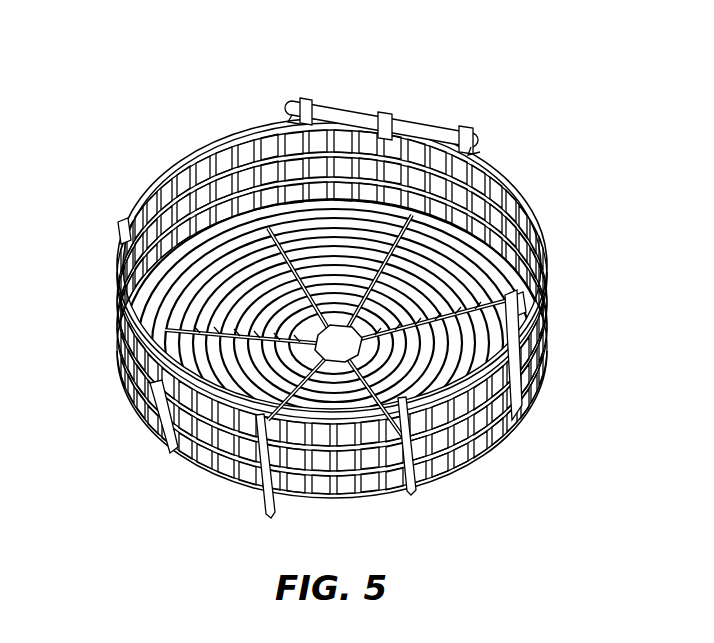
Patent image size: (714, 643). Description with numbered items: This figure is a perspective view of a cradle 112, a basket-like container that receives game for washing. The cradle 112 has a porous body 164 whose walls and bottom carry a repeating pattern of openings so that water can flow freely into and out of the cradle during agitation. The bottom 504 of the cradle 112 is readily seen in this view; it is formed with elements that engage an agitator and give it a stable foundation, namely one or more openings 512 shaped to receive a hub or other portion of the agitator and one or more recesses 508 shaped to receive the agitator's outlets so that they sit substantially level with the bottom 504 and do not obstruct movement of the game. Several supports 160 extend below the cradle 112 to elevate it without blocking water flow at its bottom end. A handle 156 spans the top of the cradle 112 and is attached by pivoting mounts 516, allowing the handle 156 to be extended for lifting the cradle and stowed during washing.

The cradle 112 is at (335, 66).
The handle 156 is at (369, 118).
The bottom 504 is at (450, 245).
The recess 508 is at (370, 254).
The opening 512 is at (336, 341).
The pivoting mount 516 is at (122, 228).
The support 160 is at (512, 398).
The body 164 is at (214, 472).